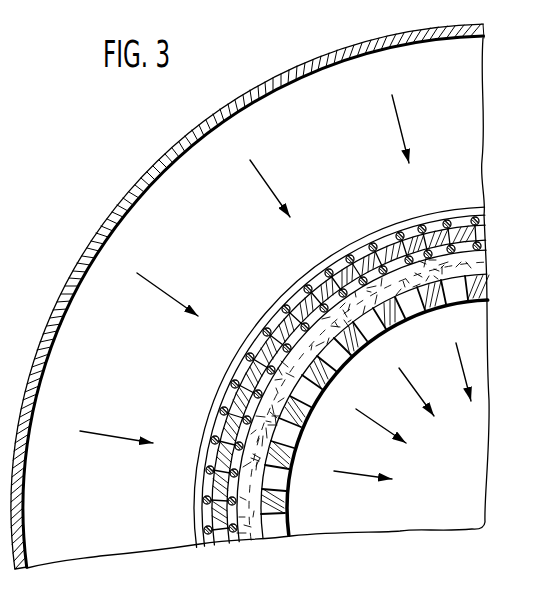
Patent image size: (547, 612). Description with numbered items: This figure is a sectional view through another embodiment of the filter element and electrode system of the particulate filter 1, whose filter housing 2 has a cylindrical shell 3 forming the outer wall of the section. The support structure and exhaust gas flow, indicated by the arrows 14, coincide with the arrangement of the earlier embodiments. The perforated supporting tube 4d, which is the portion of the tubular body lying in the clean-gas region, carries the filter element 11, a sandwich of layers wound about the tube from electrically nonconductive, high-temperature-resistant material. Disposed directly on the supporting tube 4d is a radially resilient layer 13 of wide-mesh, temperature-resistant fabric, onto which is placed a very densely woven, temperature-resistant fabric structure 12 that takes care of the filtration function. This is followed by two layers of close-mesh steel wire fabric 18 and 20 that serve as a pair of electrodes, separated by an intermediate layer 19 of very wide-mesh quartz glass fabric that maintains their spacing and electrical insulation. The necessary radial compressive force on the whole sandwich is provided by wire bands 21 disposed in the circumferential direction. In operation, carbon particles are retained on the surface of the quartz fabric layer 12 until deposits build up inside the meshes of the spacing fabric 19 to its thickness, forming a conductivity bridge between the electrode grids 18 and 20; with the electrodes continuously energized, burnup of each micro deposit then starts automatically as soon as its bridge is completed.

The particulate filter 1 is at (247, 296).
The filter housing 2 is at (160, 150).
The cylindrical shell 3 is at (222, 108).
The supporting tube 4d is at (434, 311).
The filter element 11 is at (253, 312).
The fabric structure 12 is at (482, 260).
The radially resilient layer 13 is at (485, 282).
The gas flow 14 is at (158, 283).
The steel wire fabric layer 18 is at (481, 244).
The intermediate layer 19 is at (480, 230).
The steel wire fabric layer 20 is at (480, 212).
The wire bands 21 is at (459, 213).